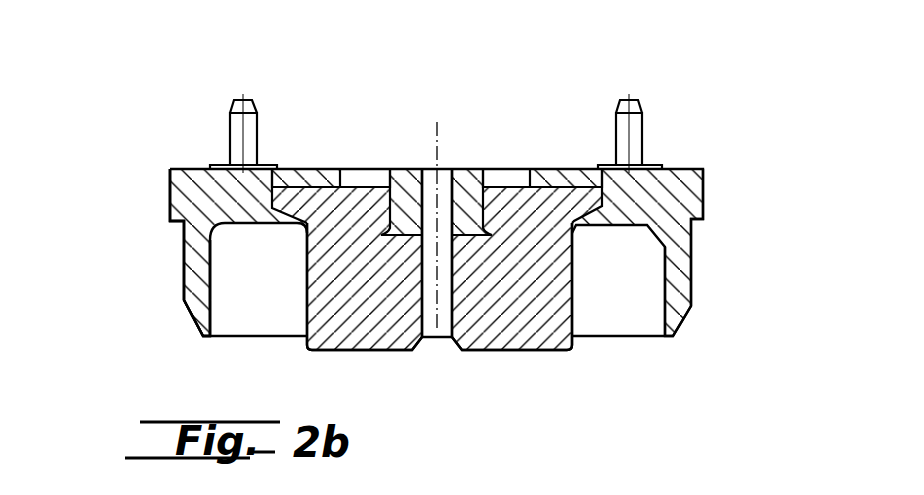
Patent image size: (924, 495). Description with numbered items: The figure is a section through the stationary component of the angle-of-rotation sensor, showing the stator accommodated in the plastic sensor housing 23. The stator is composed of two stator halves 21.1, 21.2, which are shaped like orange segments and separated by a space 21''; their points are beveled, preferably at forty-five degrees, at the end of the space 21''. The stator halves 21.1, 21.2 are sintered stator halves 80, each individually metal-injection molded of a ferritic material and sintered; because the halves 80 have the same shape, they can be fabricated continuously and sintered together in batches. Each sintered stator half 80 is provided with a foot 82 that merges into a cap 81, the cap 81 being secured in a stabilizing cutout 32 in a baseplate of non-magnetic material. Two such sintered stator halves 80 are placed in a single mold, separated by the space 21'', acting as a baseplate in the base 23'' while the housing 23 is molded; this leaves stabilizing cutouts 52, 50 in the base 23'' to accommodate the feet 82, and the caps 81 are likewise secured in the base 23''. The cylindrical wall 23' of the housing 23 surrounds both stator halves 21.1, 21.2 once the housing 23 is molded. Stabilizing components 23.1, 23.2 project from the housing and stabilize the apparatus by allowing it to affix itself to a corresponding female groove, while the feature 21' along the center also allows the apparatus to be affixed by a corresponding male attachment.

The housing 23 is at (489, 195).
The stabilizing component 23.1 is at (230, 112).
The stabilizing component 23.2 is at (642, 122).
The cylindrical wall 23' is at (742, 252).
The base 23'' is at (130, 252).
The stabilizing cutout 50 is at (153, 252).
The cap 81 is at (284, 171).
The foot 82 is at (322, 207).
The stabilizing cutout 52 is at (342, 178).
The stabilizing cutout 32 is at (558, 186).
The attachment feature 21' is at (441, 190).
The space 21'' is at (476, 289).
The stator half 21.1 is at (357, 325).
The stator half 21.2 is at (549, 322).
The sintered stator half 80 is at (476, 298).